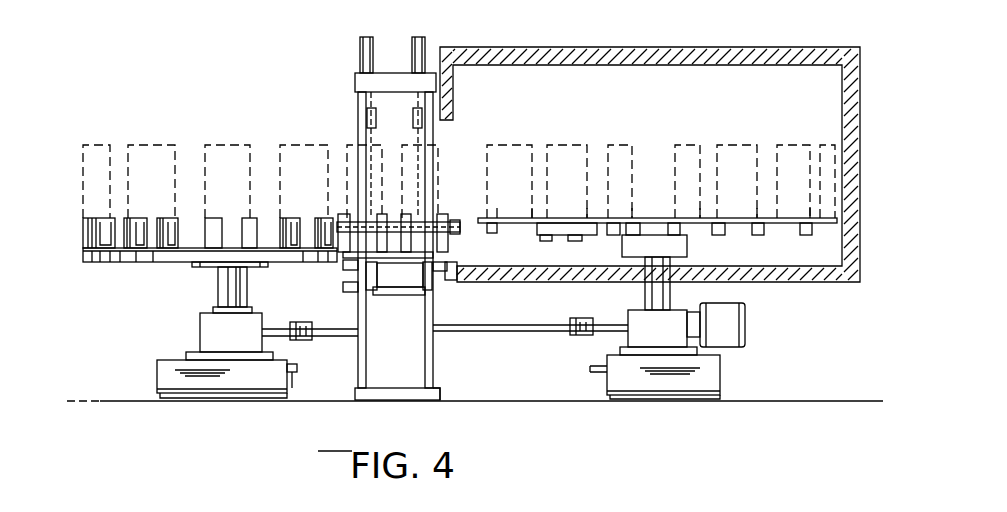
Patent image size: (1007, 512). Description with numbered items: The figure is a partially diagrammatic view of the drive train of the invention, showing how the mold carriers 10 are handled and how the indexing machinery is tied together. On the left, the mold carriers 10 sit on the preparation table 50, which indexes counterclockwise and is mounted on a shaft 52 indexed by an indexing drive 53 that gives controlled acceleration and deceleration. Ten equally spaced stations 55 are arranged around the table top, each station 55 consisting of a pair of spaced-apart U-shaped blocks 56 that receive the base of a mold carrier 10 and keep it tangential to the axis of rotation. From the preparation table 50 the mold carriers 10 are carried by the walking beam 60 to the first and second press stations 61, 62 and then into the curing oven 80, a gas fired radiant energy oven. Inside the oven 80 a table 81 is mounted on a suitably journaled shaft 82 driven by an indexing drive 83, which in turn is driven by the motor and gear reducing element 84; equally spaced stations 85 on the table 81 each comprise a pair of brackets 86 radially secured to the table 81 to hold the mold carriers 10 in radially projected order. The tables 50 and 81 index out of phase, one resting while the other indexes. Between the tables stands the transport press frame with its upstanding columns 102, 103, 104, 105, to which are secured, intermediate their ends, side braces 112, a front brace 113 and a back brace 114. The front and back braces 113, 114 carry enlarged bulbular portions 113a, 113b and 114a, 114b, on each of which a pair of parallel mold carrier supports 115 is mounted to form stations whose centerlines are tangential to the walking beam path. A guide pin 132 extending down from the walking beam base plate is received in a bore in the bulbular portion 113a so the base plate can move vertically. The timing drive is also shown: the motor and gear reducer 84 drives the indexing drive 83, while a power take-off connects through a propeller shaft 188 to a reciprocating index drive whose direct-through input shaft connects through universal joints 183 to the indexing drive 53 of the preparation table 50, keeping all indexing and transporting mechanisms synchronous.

The mold carrier 10 is at (98, 143).
The preparation table 50 is at (142, 268).
The shaft 52 is at (222, 282).
The indexing drive 53 is at (219, 344).
The station 55 is at (100, 218).
The U-shaped block 56 is at (168, 218).
The walking beam 60 is at (465, 228).
The first press station 61 is at (350, 128).
The second press station 62 is at (412, 140).
The curing oven 80 is at (597, 48).
The table 81 is at (740, 236).
The shaft 82 is at (672, 292).
The indexing drive 83 is at (645, 340).
The motor and gear reducing element 84 is at (728, 322).
The station 85 is at (562, 216).
The bracket 86 is at (572, 236).
The column 102 is at (362, 372).
The column 103 is at (440, 372).
The column 104 is at (436, 394).
The column 105 is at (397, 394).
The side brace 112 is at (388, 288).
The front brace 113 is at (350, 298).
The bulbular portion 113a is at (357, 266).
The bulbular portion 113b is at (350, 287).
The back brace 114 is at (440, 300).
The bulbular portion 114a is at (470, 272).
The bulbular portion 114b is at (451, 271).
The mold carrier support 115 is at (340, 220).
The guide pin 132 is at (380, 283).
The universal joint 183 is at (292, 388).
The propeller shaft 188 is at (590, 372).